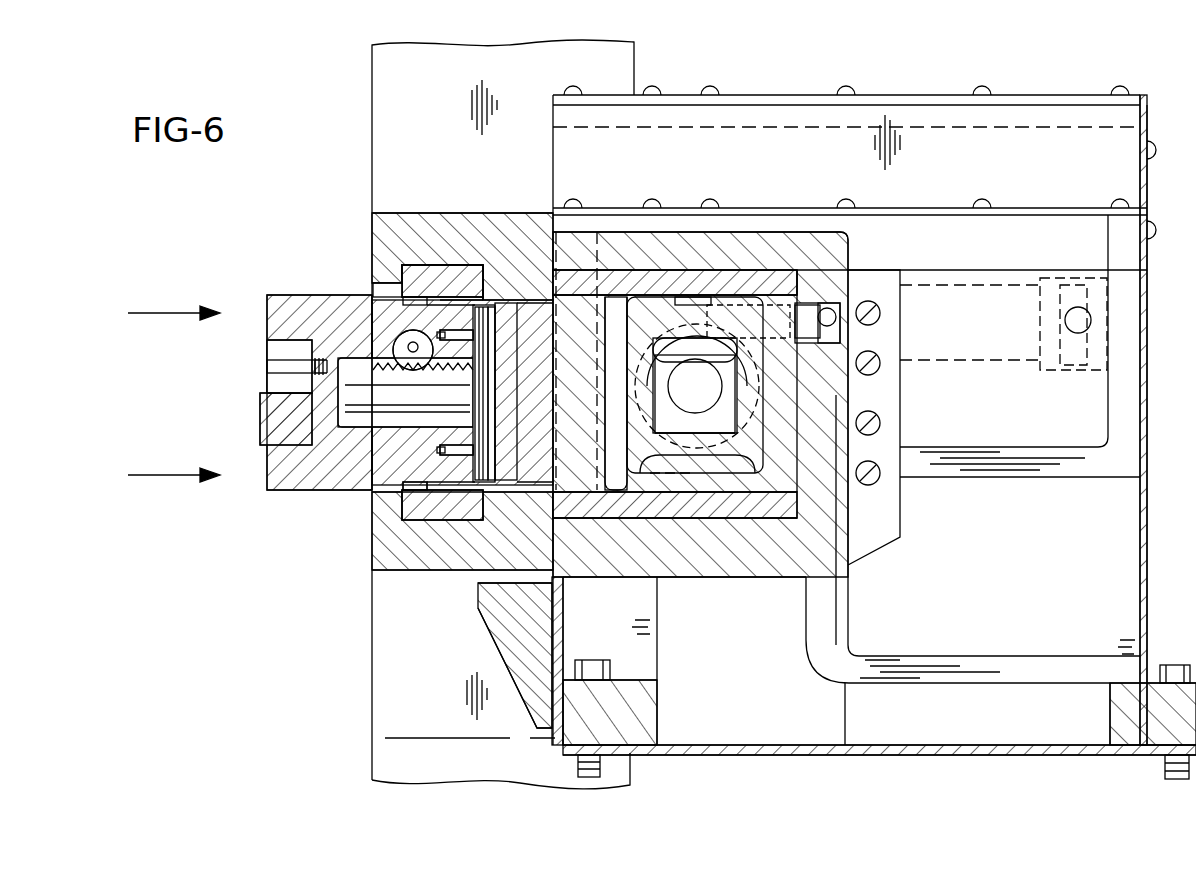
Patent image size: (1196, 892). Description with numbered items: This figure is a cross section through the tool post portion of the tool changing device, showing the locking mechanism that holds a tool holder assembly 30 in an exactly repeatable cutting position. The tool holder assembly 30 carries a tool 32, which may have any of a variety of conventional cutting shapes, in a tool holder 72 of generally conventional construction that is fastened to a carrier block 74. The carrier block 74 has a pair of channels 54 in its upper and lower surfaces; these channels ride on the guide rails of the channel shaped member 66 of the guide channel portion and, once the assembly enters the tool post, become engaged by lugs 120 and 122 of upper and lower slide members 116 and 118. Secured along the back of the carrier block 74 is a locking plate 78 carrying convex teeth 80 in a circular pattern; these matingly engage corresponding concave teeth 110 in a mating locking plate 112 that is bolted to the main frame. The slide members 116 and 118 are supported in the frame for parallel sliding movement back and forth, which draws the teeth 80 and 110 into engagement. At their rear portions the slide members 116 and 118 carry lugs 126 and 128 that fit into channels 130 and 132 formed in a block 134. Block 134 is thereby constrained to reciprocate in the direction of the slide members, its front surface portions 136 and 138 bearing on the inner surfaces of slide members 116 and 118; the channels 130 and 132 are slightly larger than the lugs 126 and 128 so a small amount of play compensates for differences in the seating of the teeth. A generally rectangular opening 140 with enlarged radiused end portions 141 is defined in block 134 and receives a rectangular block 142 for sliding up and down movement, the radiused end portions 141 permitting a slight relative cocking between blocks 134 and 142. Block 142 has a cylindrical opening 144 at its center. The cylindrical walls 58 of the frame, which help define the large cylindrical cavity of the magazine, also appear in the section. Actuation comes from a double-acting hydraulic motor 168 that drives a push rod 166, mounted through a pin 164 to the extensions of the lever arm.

The tool holder assembly 30 is at (263, 510).
The tool 32 is at (265, 425).
The channels 54 is at (388, 316).
The cylindrical walls 58 is at (695, 386).
The channel shaped member 66 is at (380, 240).
The tool holder 72 is at (278, 307).
The carrier block 74 is at (377, 473).
The locking plate 78 is at (432, 498).
The convex teeth 80 is at (470, 495).
The teeth 110 is at (488, 335).
The mating locking plate 112 is at (500, 335).
The upper slide member 116 is at (462, 283).
The lower slide member 118 is at (480, 507).
The lug 120 is at (400, 287).
The lug 122 is at (395, 548).
The lug 126 is at (696, 300).
The lug 128 is at (730, 500).
The channel 130 is at (700, 296).
The channel 132 is at (732, 490).
The block 134 is at (760, 445).
The front surface portion 136 is at (697, 480).
The front surface portion 138 is at (648, 297).
The rectangular opening 140 is at (850, 557).
The enlarged radiused end portions 141 is at (632, 470).
The rectangular block 142 is at (770, 425).
The cylindrical opening 144 is at (765, 378).
The pin 164 is at (768, 300).
The push rod 166 is at (850, 378).
The double-acting hydraulic motor 168 is at (968, 350).